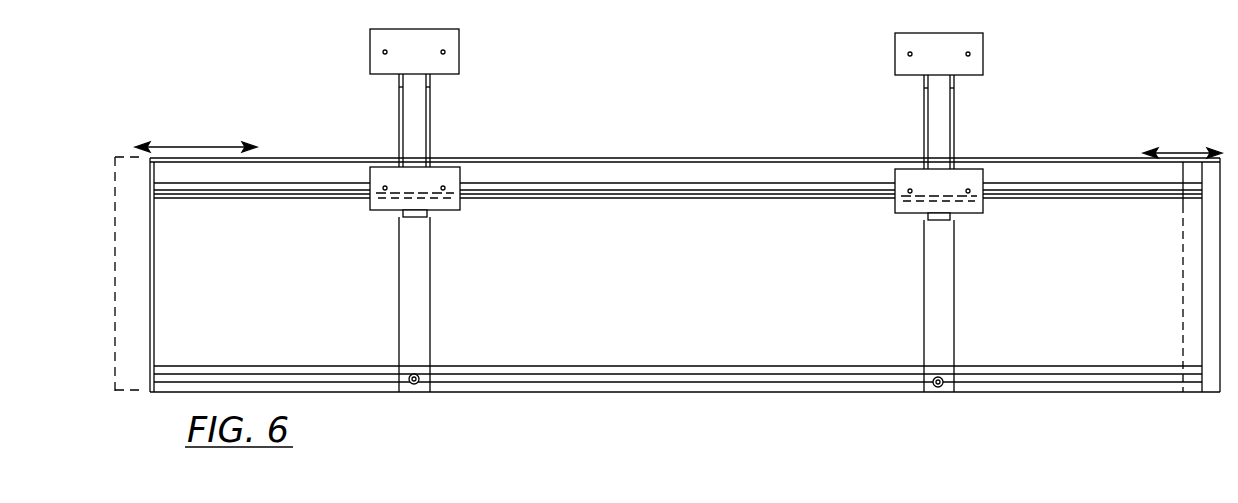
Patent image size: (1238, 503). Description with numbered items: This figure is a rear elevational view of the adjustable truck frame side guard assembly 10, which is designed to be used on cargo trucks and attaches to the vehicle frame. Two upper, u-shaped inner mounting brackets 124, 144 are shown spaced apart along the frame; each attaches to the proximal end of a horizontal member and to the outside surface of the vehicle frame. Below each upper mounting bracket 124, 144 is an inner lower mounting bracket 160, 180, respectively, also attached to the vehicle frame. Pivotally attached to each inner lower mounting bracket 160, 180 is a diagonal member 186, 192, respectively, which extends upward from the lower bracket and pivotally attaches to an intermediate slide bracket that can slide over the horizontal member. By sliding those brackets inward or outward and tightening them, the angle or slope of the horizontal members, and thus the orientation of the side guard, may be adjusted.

The adjustable truck frame side guard assembly 10 is at (1100, 98).
The upper u-shaped inner mounting bracket 124 is at (894, 51).
The upper u-shaped inner mounting bracket 144 is at (370, 47).
The inner lower mounting bracket 160 is at (900, 212).
The inner lower mounting bracket 180 is at (460, 212).
The diagonal member 186 is at (935, 110).
The diagonal member 192 is at (430, 118).